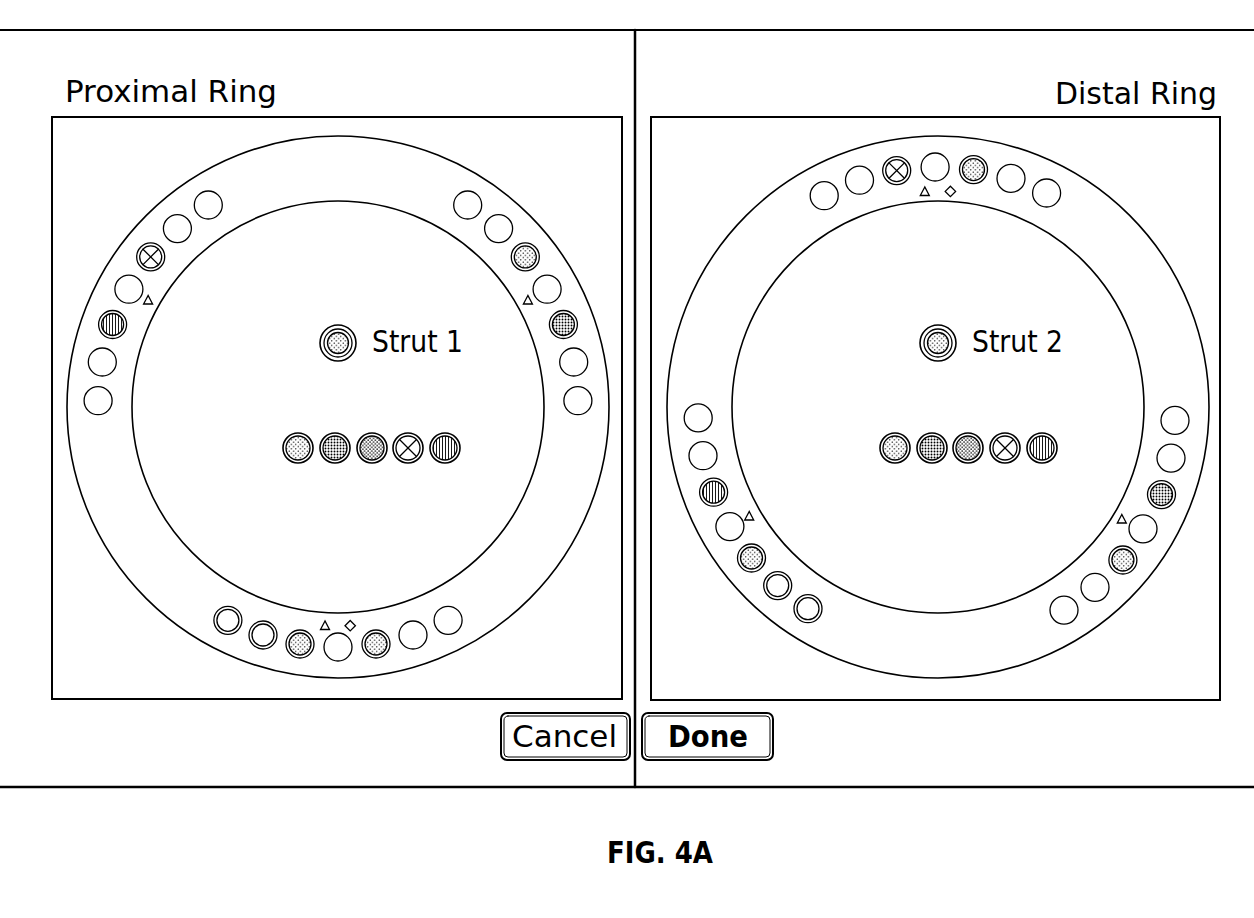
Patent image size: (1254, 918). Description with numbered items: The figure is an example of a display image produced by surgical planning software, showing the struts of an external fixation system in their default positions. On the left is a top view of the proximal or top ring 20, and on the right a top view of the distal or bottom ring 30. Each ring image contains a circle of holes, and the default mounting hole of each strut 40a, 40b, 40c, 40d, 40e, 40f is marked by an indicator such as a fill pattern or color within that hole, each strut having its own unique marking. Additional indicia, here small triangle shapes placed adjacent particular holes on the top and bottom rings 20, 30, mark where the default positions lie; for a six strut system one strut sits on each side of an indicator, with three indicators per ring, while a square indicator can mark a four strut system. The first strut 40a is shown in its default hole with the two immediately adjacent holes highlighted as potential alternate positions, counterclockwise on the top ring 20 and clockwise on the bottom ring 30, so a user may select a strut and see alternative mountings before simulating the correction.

The proximal ring 20 is at (323, 136).
The distal ring 30 is at (857, 145).
The first strut 40a is at (300, 652).
The strut 40b is at (378, 652).
The strut 40c is at (565, 318).
The strut 40d is at (528, 252).
The strut 40e is at (152, 245).
The strut 40f is at (115, 310).